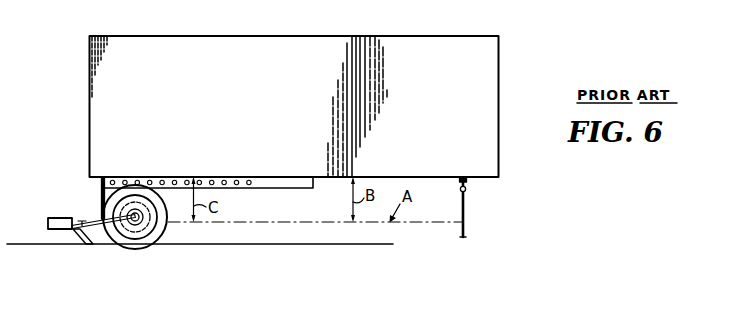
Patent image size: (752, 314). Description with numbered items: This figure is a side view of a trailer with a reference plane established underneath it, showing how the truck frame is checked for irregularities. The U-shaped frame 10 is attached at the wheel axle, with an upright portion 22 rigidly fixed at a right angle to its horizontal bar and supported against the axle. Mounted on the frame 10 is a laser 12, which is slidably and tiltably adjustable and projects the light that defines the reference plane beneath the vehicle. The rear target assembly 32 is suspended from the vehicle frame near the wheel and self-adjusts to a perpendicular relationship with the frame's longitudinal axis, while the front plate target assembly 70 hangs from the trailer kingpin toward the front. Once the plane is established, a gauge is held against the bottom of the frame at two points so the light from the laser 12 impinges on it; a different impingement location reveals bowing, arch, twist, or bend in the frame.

The U-shaped frame 10 is at (75, 204).
The laser 12 is at (58, 218).
The upright portion 22 is at (79, 242).
The rear target assembly 32 is at (101, 220).
The front plate target assembly 70 is at (483, 207).